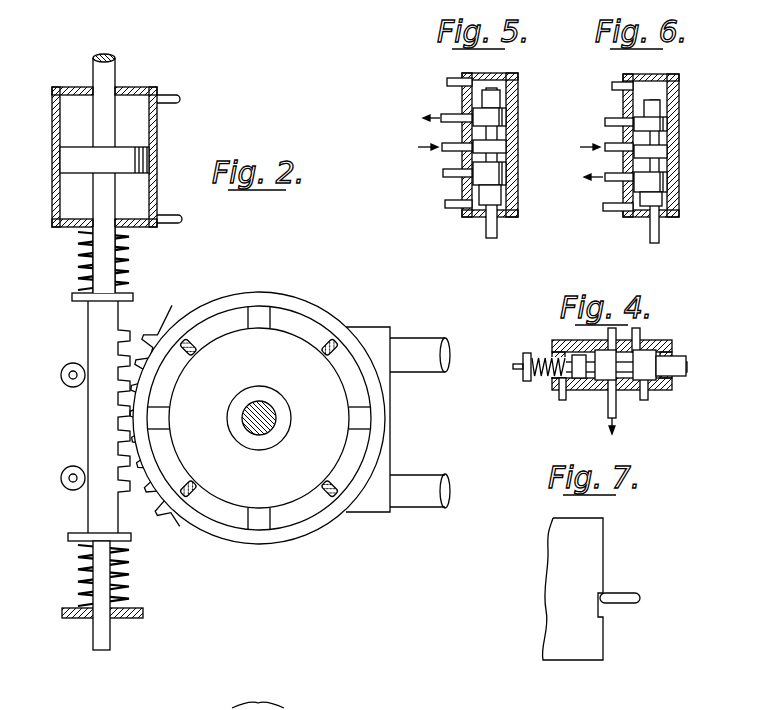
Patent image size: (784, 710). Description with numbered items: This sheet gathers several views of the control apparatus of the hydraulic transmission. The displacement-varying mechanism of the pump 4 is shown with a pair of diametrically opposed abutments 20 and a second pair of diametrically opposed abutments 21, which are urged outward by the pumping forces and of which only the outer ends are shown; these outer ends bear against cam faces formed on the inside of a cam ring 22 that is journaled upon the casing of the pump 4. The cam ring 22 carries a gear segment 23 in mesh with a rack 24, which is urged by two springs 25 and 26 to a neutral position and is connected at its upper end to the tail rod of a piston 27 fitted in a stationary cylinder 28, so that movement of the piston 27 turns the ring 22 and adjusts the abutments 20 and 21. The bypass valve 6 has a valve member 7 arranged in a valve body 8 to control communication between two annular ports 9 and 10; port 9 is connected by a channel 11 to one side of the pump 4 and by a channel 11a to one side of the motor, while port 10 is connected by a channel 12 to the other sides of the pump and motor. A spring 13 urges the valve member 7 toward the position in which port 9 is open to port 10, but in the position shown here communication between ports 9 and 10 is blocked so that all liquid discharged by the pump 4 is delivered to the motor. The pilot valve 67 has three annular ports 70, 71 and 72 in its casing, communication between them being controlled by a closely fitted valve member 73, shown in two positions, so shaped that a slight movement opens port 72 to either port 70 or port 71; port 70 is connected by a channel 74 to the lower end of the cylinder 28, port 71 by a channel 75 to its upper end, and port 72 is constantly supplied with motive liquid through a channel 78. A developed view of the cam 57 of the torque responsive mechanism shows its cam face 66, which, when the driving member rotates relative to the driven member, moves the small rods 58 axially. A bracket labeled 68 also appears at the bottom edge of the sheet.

In FIG. 2, the pump 4 is at (259, 418).
In FIG. 4, the bypass valve 6 is at (680, 338).
In FIG. 4, the valve member 7 is at (688, 370).
In FIG. 4, the valve body 8 is at (665, 390).
In FIG. 4, the port 9 is at (603, 380).
In FIG. 4, the port 10 is at (648, 380).
In FIG. 2, the channel 11 is at (450, 491).
In FIG. 4, the channel 11 is at (608, 333).
In FIG. 4, the channel 11a is at (598, 410).
In FIG. 2, the channel 12 is at (450, 355).
In FIG. 4, the channel 12 is at (640, 335).
In FIG. 4, the spring 13 is at (547, 360).
In FIG. 2, the abutments 20 is at (322, 352).
In FIG. 2, the abutments 21 is at (200, 350).
In FIG. 2, the cam ring 22 is at (267, 540).
In FIG. 2, the gear segment 23 is at (156, 334).
In FIG. 2, the rack 24 is at (100, 407).
In FIG. 2, the spring 25 is at (82, 565).
In FIG. 2, the spring 26 is at (80, 247).
In FIG. 2, the piston 27 is at (72, 157).
In FIG. 2, the cylinder 28 is at (76, 117).
In FIG. 7, the cam 57 is at (583, 655).
In FIG. 7, the rods 58 is at (640, 598).
In FIG. 7, the cam face 66 is at (608, 570).
In FIG. 5, the pilot valve 67 is at (517, 76).
In FIG. 6, the pilot valve 67 is at (678, 76).
In FIG. 2, the assembly 68 is at (258, 695).
In FIG. 5, the port 70 is at (505, 176).
In FIG. 6, the port 70 is at (668, 174).
In FIG. 5, the port 71 is at (507, 118).
In FIG. 6, the port 71 is at (668, 123).
In FIG. 5, the port 72 is at (507, 147).
In FIG. 6, the port 72 is at (668, 151).
In FIG. 5, the valve member 73 is at (500, 98).
In FIG. 6, the valve member 73 is at (660, 106).
In FIG. 2, the channel 74 is at (175, 226).
In FIG. 5, the channel 74 is at (444, 170).
In FIG. 6, the channel 74 is at (610, 173).
In FIG. 2, the channel 75 is at (168, 97).
In FIG. 5, the channel 75 is at (444, 114).
In FIG. 6, the channel 75 is at (610, 118).
In FIG. 5, the channel 78 is at (444, 143).
In FIG. 6, the channel 78 is at (610, 144).